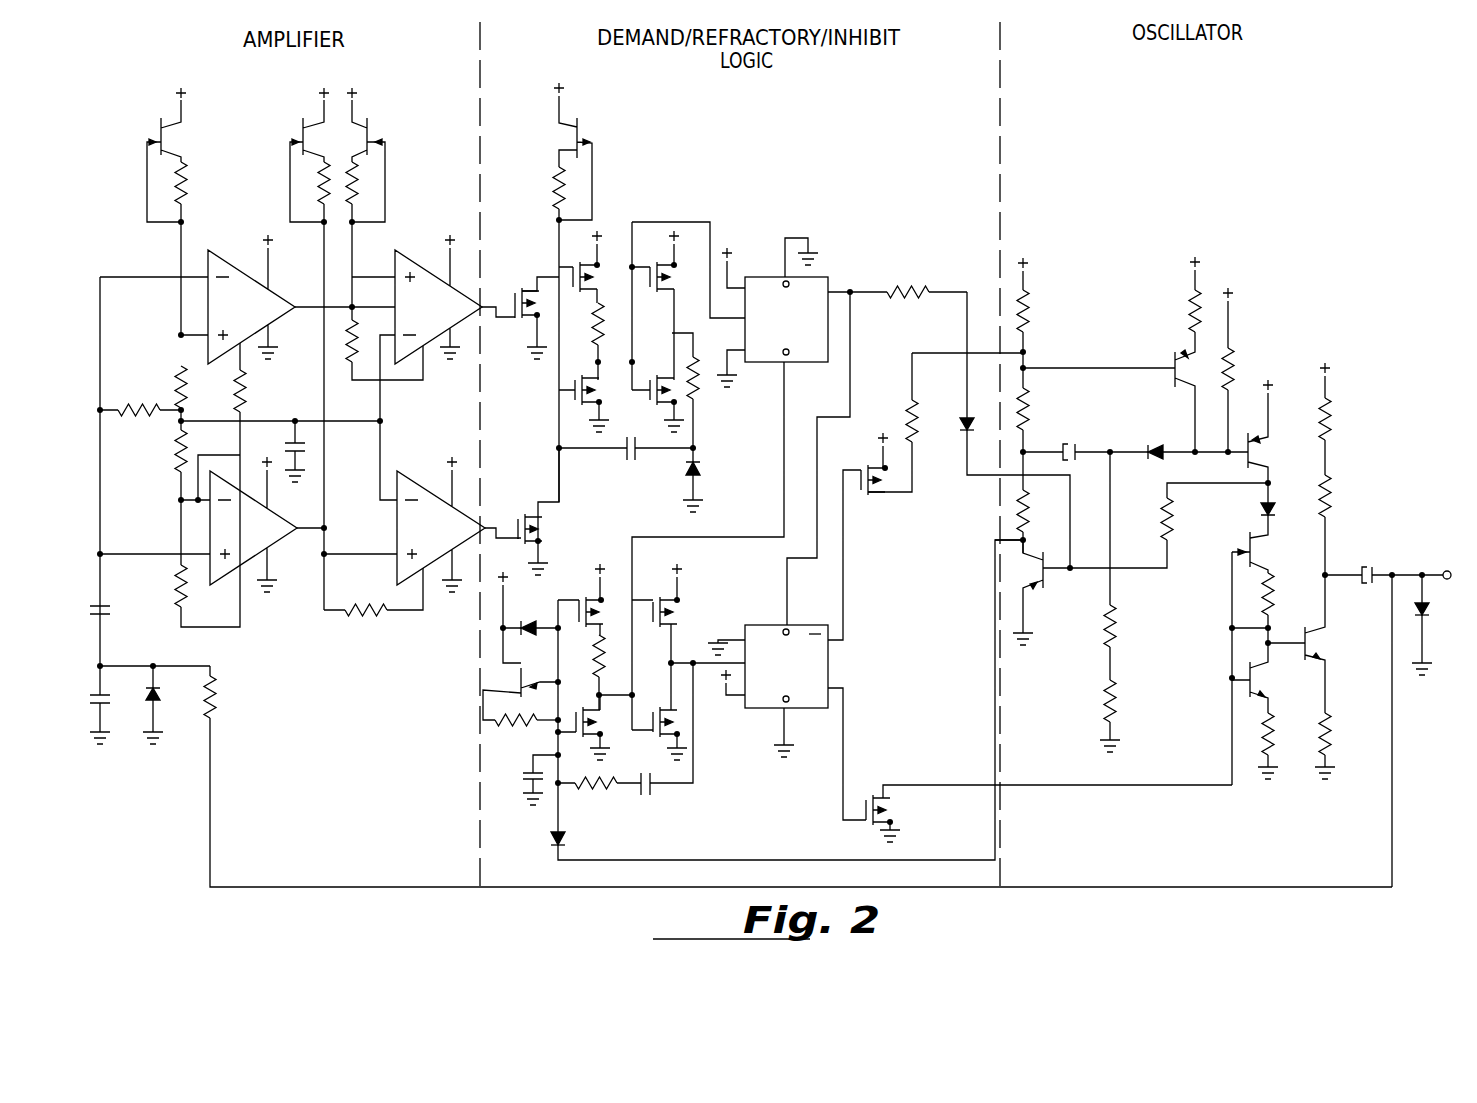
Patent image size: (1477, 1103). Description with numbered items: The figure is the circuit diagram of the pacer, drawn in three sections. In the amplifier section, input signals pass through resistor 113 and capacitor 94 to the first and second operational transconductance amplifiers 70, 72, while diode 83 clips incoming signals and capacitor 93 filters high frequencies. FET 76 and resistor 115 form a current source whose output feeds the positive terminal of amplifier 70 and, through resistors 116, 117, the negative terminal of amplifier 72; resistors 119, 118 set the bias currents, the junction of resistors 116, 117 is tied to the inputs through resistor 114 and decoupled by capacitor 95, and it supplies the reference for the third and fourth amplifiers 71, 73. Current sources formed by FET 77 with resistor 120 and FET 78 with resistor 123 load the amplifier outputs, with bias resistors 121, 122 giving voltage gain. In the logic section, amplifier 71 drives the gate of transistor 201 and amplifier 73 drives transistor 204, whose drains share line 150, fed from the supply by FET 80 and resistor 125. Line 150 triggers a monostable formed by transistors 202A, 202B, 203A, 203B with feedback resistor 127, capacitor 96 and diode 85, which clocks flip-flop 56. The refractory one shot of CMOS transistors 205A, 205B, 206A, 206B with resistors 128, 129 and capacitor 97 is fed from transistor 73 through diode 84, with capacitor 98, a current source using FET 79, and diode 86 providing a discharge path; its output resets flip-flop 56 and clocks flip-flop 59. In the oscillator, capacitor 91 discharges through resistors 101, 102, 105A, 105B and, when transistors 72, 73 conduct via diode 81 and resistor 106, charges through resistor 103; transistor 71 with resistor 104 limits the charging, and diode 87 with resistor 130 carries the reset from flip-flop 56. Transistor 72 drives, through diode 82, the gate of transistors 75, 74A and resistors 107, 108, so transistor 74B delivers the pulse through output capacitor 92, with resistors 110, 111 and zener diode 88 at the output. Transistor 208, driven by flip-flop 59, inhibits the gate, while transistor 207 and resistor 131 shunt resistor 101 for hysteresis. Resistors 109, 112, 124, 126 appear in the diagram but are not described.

The flip-flop 56 is at (836, 278).
The flip-flop 59 is at (816, 705).
The amplifier 70 is at (220, 262).
The transistor 71 is at (408, 262).
The transistor 72 is at (275, 535).
The transistor 73 is at (408, 487).
The transistor 74A is at (1258, 678).
The transistor 74B is at (1315, 641).
The transistor 75 is at (1262, 550).
The FET 76 is at (157, 135).
The FET 77 is at (298, 135).
The FET 78 is at (372, 133).
The FET 79 is at (526, 673).
The FET 80 is at (582, 130).
The diode 81 is at (1158, 445).
The diode 82 is at (1272, 510).
The diode 83 is at (158, 698).
The diode 84 is at (552, 838).
The diode 85 is at (700, 468).
The diode 86 is at (530, 624).
The diode 87 is at (965, 435).
The zener diode 88 is at (1428, 608).
The capacitor 91 is at (1073, 442).
The output capacitor 92 is at (1367, 565).
The capacitor 93 is at (95, 706).
The capacitor 94 is at (98, 605).
The capacitor 95 is at (286, 438).
The capacitor 96 is at (640, 452).
The capacitor 97 is at (653, 788).
The capacitor 98 is at (528, 788).
The resistor 101 is at (1032, 302).
The resistor 102 is at (1030, 408).
The resistor 103 is at (1030, 498).
The resistor 104 is at (1190, 300).
The resistor 105A is at (1116, 618).
The resistor 105B is at (1118, 692).
The resistor 106 is at (1173, 520).
The resistor 107 is at (1272, 598).
The resistor 108 is at (1272, 733).
The resistor 109 is at (1332, 733).
The resistor 110 is at (1335, 488).
The resistor 111 is at (1333, 408).
The resistor 112 is at (1240, 360).
The resistor 113 is at (218, 690).
The resistor 114 is at (147, 405).
The resistor 115 is at (190, 175).
The resistor 116 is at (178, 385).
The resistor 117 is at (176, 448).
The resistor 118 is at (189, 541).
The resistor 119 is at (250, 380).
The resistor 120 is at (318, 178).
The resistor 121 is at (346, 365).
The resistor 122 is at (362, 616).
The resistor 123 is at (360, 180).
The resistor 124 is at (524, 727).
The resistor 125 is at (557, 170).
The resistor 126 is at (596, 322).
The resistor 127 is at (700, 375).
The resistor 128 is at (583, 657).
The resistor 129 is at (590, 788).
The resistor 130 is at (915, 285).
The resistor 131 is at (908, 400).
The line 150 is at (562, 482).
The transistor 201 is at (522, 320).
The transistor 202A is at (603, 266).
The transistor 202B is at (573, 390).
The transistor 203A is at (678, 265).
The transistor 203B is at (678, 402).
The transistor 204 is at (541, 522).
The CMOS transistor 205A is at (578, 600).
The CMOS transistor 205B is at (600, 718).
The CMOS transistor 206A is at (678, 606).
The CMOS transistor 206B is at (678, 725).
The transistor 207 is at (870, 472).
The CMOS transistor 208 is at (892, 810).